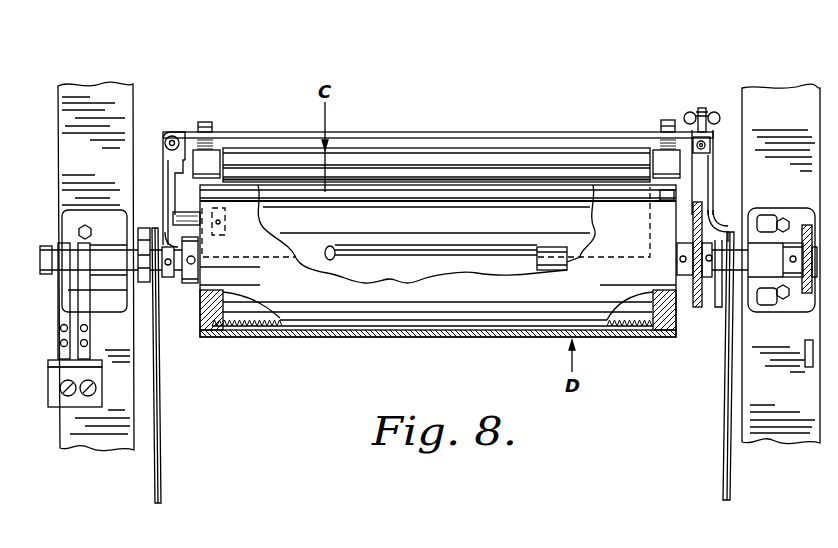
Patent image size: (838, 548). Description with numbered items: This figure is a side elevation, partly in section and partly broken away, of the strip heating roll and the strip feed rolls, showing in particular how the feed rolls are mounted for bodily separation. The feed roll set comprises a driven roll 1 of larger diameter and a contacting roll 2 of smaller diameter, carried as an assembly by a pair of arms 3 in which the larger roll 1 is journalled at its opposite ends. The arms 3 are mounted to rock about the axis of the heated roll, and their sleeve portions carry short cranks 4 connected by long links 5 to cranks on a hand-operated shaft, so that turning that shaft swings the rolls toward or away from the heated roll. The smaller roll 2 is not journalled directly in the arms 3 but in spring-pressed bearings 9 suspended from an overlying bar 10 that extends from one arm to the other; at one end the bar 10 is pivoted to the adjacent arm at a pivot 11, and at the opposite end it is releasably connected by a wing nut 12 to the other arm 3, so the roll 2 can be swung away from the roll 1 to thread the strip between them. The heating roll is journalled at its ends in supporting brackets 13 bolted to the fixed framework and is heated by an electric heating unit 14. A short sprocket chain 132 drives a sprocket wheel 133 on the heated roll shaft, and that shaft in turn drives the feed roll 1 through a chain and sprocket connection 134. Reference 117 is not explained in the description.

The driven roll 1 is at (475, 247).
The contacting roll 2 is at (360, 155).
The arms 3 is at (167, 170).
The short cranks 4 is at (738, 222).
The long links 5 is at (158, 357).
The spring-pressed bearings 9 is at (212, 158).
The bar 10 is at (480, 133).
The pivot 11 is at (174, 138).
The wing nut 12 is at (701, 108).
The supporting brackets 13 is at (767, 217).
The electric heating unit 14 is at (258, 326).
The inner roller 117 is at (340, 265).
The short sprocket chain 132 is at (805, 345).
The sprocket wheel 133 is at (807, 283).
The chain and sprocket connection 134 is at (697, 205).